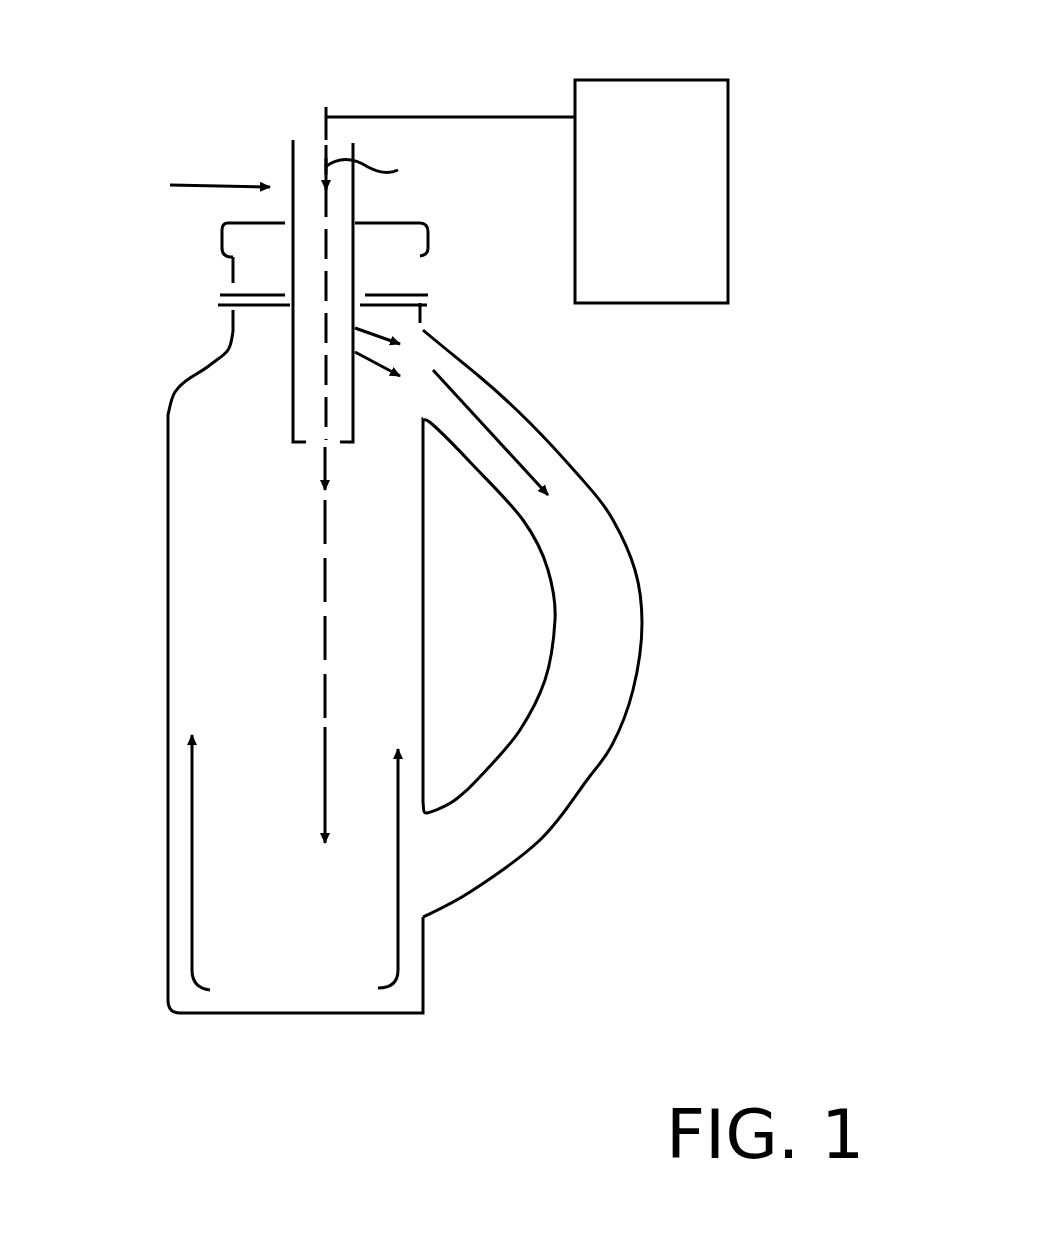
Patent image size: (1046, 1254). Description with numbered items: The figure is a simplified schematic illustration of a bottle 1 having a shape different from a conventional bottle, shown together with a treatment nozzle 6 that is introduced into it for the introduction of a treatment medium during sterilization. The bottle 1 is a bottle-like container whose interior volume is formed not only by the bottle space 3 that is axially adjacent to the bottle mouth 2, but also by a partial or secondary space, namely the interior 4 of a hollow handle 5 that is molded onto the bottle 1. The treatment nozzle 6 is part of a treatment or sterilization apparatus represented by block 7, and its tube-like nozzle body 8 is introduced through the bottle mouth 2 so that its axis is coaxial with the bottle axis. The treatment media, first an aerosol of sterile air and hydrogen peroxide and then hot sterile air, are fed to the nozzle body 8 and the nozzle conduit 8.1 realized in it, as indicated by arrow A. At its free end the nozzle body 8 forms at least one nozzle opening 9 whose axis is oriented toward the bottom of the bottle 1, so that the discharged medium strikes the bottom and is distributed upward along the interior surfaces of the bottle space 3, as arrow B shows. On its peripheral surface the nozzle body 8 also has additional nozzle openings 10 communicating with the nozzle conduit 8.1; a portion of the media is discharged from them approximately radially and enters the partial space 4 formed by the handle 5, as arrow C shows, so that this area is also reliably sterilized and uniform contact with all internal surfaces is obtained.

The bottle 1 is at (662, 505).
The bottle mouth 2 is at (403, 270).
The bottle space 3 is at (210, 633).
The interior of hollow handle 4 is at (574, 623).
The hollow handle 5 is at (628, 710).
The treatment nozzle 6 is at (200, 189).
The treatment or sterilization apparatus 7 is at (657, 213).
The nozzle body 8 is at (292, 352).
The nozzle conduit 8.1 is at (307, 313).
The nozzle opening 9 is at (313, 448).
The additional nozzle openings 10 is at (357, 330).